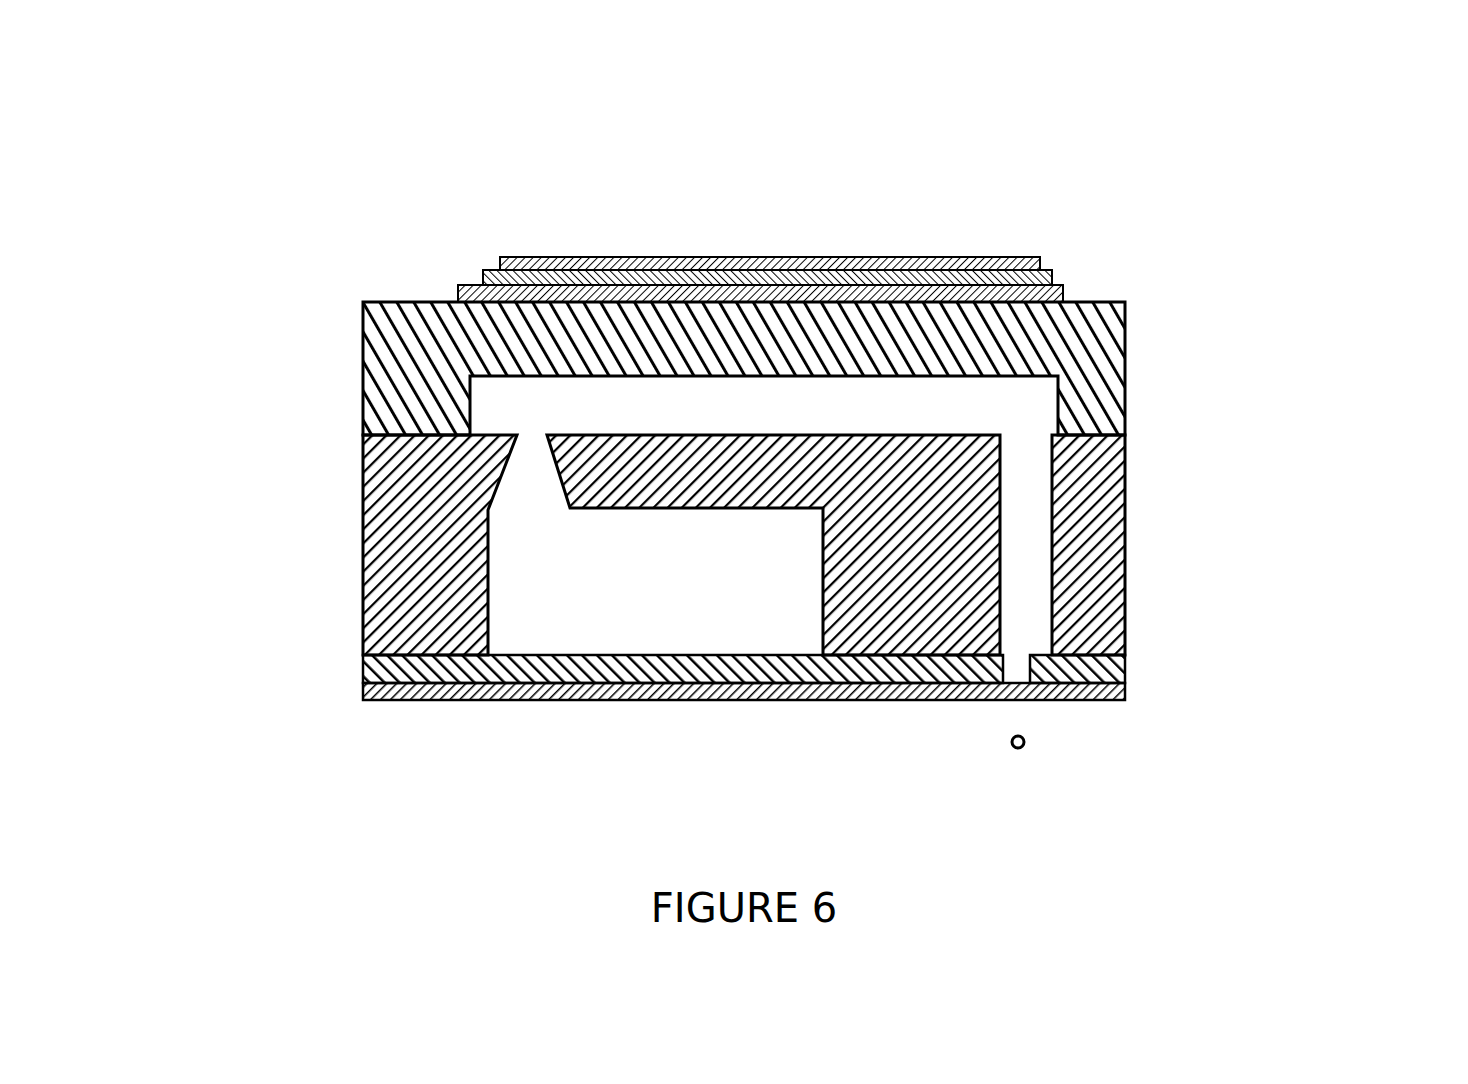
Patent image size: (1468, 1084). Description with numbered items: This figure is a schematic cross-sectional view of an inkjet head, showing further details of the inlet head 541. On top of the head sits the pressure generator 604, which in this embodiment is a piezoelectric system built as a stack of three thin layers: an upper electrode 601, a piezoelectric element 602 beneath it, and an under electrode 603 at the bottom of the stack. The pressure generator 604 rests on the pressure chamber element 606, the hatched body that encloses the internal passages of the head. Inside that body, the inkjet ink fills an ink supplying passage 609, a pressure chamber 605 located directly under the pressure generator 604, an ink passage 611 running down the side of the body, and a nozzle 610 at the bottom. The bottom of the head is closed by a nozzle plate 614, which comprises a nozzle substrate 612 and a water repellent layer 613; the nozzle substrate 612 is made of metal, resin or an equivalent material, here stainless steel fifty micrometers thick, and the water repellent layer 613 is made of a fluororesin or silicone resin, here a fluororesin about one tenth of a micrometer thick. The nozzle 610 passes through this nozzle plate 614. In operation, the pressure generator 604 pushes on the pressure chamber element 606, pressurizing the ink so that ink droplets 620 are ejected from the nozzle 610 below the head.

The inlet head 541 is at (758, 445).
The upper electrode 601 is at (682, 150).
The piezoelectric element 602 is at (872, 278).
The under electrode 603 is at (775, 290).
The pressure generator 604 is at (760, 180).
The pressure chamber 605 is at (550, 403).
The pressure chamber element 606 is at (358, 377).
The ink supplying passage 609 is at (655, 573).
The nozzle 610 is at (1012, 677).
The ink passage 611 is at (1030, 520).
The nozzle substrate 612 is at (363, 665).
The water repellent layer 613 is at (363, 688).
The nozzle plate 614 is at (602, 665).
The ink droplets 620 is at (1152, 783).